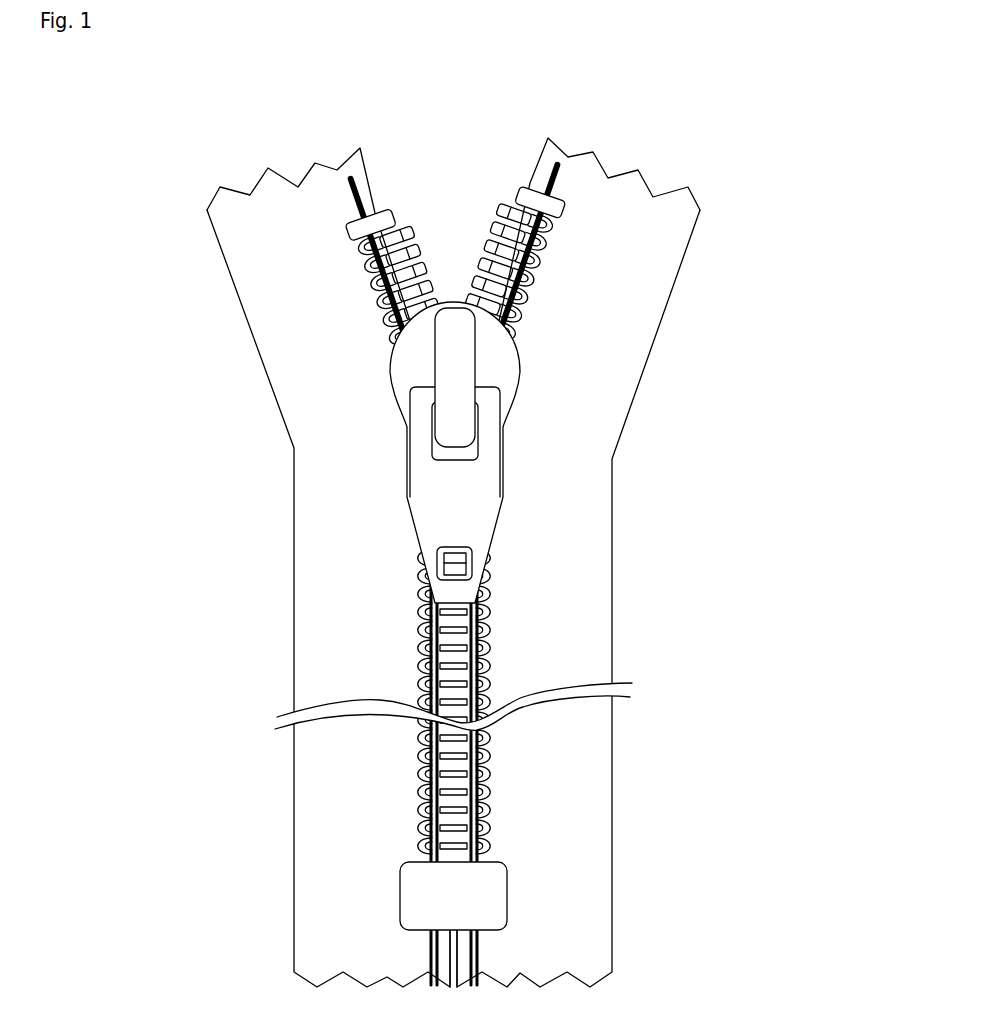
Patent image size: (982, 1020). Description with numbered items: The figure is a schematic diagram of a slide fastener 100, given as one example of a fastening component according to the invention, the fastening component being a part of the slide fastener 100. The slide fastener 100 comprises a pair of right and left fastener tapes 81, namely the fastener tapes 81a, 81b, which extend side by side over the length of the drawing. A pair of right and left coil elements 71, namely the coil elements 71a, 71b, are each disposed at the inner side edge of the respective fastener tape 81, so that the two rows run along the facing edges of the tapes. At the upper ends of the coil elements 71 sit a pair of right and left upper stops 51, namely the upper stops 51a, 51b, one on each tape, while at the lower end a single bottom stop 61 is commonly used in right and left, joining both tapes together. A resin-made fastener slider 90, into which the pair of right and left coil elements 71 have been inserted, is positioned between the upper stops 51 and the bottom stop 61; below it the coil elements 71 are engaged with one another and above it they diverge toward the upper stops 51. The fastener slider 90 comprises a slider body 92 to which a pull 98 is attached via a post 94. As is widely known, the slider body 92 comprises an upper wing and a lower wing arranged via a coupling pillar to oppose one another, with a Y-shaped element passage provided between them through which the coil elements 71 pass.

The slide fastener 100 is at (123, 95).
The upper stops 51 is at (473, 152).
The upper stop 51a is at (380, 220).
The upper stop 51b is at (526, 200).
The bottom stop 61 is at (492, 912).
The coil elements 71 is at (448, 569).
The coil element 71a is at (417, 783).
The coil element 71b is at (487, 772).
The fastener tapes 81 is at (448, 562).
The fastener tape 81a is at (267, 255).
The fastener tape 81b is at (640, 277).
The fastener slider 90 is at (452, 452).
The slider body 92 is at (505, 378).
The post 94 is at (447, 369).
The pull 98 is at (482, 503).